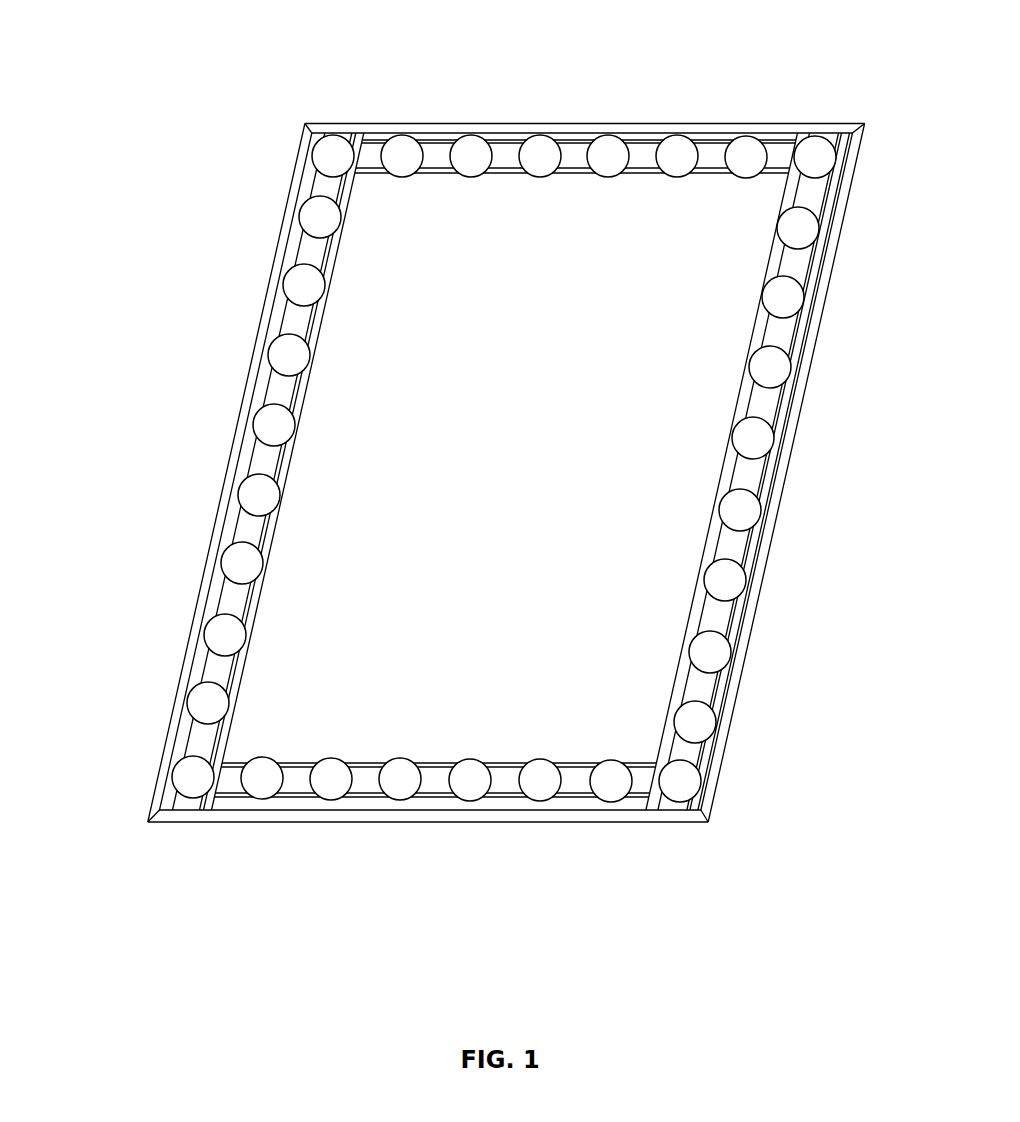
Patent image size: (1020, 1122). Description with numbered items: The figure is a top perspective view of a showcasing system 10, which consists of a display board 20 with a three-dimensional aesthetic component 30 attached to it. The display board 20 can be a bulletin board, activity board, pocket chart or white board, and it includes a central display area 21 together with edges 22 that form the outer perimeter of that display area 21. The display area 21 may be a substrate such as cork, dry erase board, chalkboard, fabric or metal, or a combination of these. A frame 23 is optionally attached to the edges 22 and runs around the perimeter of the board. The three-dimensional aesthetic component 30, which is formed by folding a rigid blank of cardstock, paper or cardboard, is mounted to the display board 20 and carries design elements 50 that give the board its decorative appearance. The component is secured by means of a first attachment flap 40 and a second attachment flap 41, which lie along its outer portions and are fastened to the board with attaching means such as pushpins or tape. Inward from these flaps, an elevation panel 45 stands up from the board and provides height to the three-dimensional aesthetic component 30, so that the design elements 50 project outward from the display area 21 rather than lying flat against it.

The showcasing system 10 is at (184, 279).
The display board 20 is at (162, 748).
The display area 21 is at (527, 447).
The edges 22 is at (786, 450).
The frame 23 is at (486, 821).
The 3D aesthetic component 30 is at (683, 135).
The first attachment flap 40 is at (505, 170).
The second attachment flap 41 is at (440, 141).
The elevation panel 45 is at (230, 600).
The design elements 50 is at (727, 583).